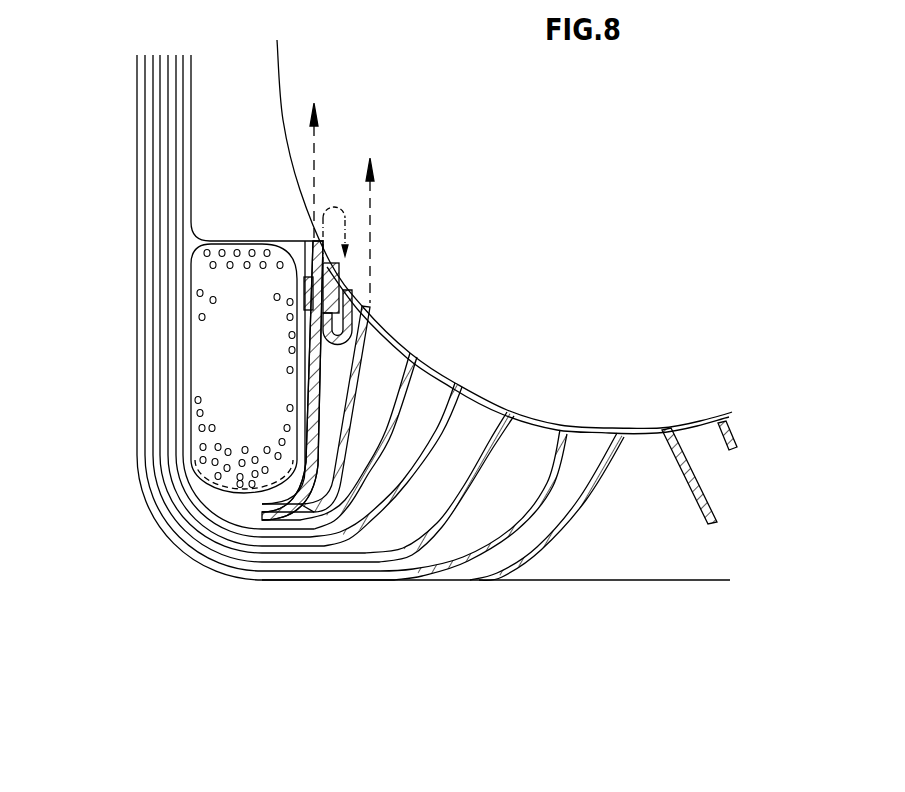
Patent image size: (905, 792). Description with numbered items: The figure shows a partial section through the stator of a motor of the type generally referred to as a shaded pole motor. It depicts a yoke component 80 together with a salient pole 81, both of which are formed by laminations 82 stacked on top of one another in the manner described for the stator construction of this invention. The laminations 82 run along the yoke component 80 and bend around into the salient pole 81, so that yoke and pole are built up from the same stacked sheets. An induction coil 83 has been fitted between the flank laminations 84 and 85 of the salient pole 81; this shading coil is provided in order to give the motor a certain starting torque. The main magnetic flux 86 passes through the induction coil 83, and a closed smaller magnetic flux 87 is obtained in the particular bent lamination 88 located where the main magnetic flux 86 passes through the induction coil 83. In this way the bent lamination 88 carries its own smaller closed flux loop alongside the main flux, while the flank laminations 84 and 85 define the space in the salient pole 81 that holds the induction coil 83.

The yoke component 80 is at (166, 156).
The salient pole 81 is at (325, 640).
The laminations 82 is at (166, 409).
The induction coil 83 is at (338, 303).
The flank lamination 84 is at (318, 468).
The flank lamination 85 is at (350, 383).
The main magnetic flux 86 is at (316, 135).
The closed smaller magnetic flux 87 is at (334, 221).
The bent lamination 88 is at (352, 320).